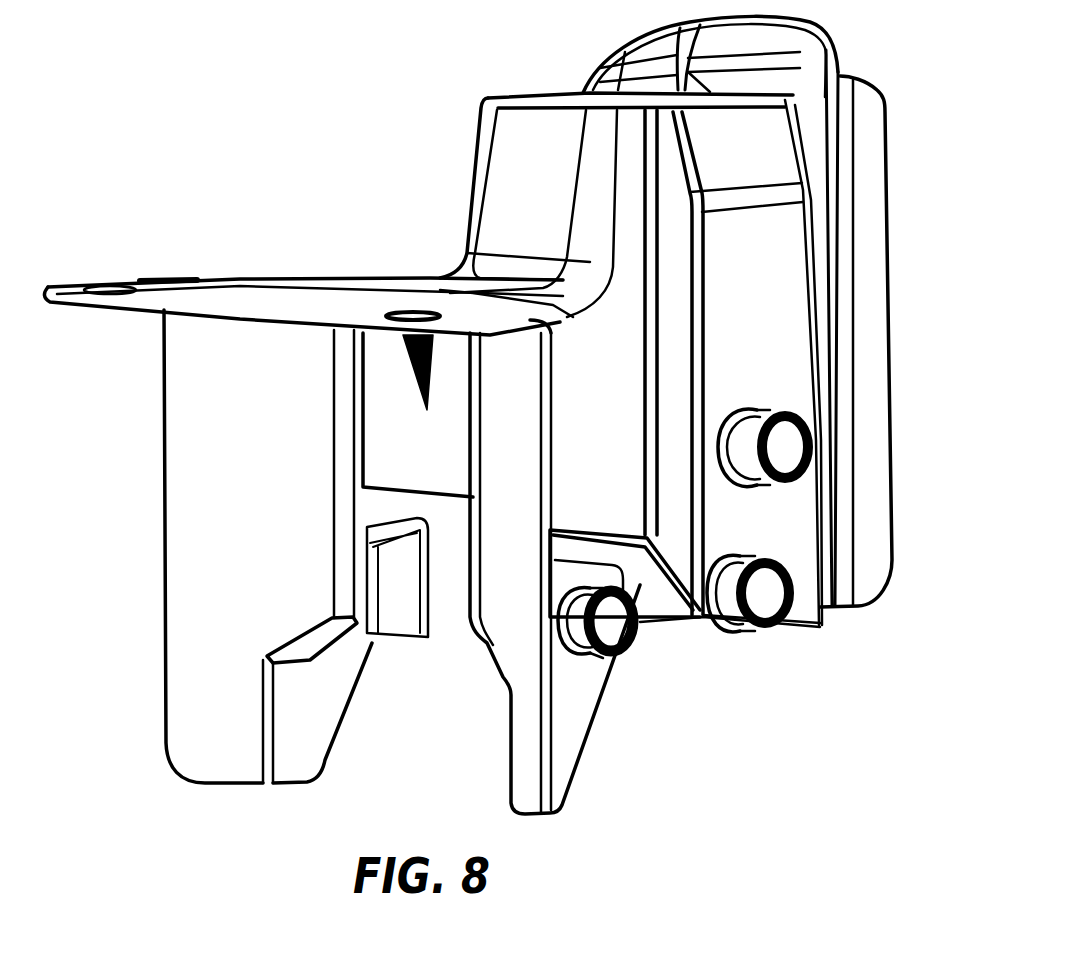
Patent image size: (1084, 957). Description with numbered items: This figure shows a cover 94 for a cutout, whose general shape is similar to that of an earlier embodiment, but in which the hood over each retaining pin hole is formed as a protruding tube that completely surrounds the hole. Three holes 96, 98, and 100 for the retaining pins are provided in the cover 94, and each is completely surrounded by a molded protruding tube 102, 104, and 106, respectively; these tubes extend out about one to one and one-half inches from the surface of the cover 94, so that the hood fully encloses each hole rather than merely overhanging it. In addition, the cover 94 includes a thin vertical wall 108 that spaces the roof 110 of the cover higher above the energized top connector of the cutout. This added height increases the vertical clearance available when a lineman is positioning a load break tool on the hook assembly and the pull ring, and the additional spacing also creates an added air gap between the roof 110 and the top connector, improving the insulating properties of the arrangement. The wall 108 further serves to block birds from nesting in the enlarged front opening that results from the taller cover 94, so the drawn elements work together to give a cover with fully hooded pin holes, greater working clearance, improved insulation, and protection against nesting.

The cover 94 is at (499, 415).
The hole 96 is at (785, 447).
The hole 98 is at (762, 594).
The hole 100 is at (613, 632).
The protruding tube 102 is at (770, 483).
The protruding tube 104 is at (753, 633).
The protruding tube 106 is at (603, 657).
The thin vertical wall 108 is at (393, 413).
The roof 110 is at (288, 300).